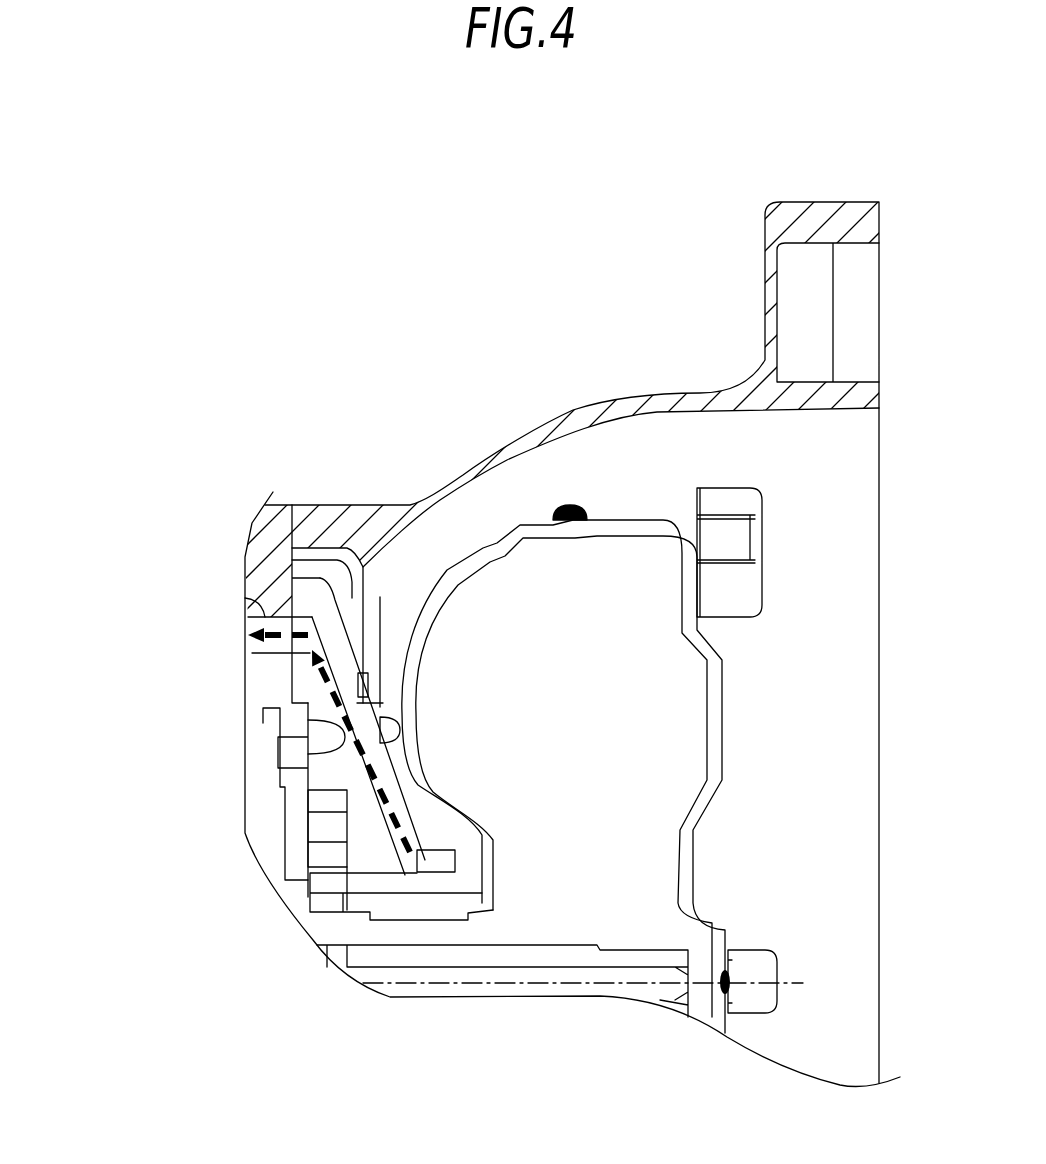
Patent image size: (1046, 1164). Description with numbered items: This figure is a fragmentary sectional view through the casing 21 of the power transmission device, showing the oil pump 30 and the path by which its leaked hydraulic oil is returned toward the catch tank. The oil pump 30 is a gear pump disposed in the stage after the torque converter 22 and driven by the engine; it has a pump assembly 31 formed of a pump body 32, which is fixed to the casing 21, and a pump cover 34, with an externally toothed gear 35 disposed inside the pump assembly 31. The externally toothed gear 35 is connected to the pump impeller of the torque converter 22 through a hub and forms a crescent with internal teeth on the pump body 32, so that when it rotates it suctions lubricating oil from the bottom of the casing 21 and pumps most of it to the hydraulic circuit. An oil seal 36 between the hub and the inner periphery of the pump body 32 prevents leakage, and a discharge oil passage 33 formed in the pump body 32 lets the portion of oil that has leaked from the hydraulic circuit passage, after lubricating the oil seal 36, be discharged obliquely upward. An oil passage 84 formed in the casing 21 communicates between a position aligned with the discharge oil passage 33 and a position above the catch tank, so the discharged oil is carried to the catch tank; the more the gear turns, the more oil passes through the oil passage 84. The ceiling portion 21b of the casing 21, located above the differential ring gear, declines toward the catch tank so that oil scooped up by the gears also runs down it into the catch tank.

The casing 21 is at (595, 400).
The ceiling portion 21b is at (265, 680).
The torque converter 22 is at (530, 500).
The oil pump 30 is at (92, 654).
The pump assembly 31 is at (108, 705).
The pump body 32 is at (383, 713).
The discharge oil passage 33 is at (340, 745).
The pump cover 34 is at (263, 722).
The externally toothed gear 35 is at (290, 780).
The oil seal 36 is at (310, 873).
The oil passage 84 is at (248, 600).